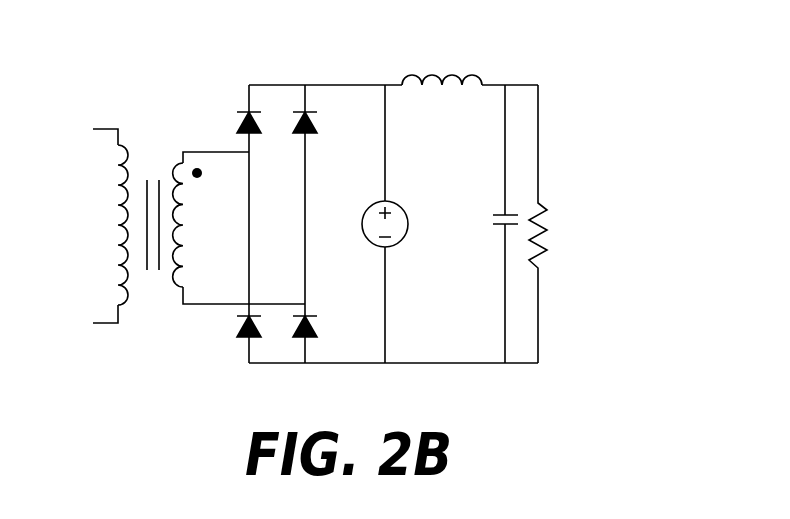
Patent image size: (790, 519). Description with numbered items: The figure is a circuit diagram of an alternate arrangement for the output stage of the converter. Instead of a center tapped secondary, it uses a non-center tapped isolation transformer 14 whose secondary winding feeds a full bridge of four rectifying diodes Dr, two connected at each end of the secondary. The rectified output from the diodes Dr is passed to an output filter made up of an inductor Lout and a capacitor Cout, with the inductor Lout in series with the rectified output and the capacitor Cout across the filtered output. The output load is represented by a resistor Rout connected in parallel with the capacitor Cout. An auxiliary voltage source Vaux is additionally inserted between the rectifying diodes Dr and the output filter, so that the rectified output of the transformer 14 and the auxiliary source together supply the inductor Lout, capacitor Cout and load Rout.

The isolation transformer 14 is at (153, 138).
The rectifying diodes Dr is at (292, 227).
The auxiliary voltage source Vaux is at (406, 224).
The inductor Lout is at (442, 60).
The capacitor Cout is at (474, 224).
The output load Rout is at (572, 224).